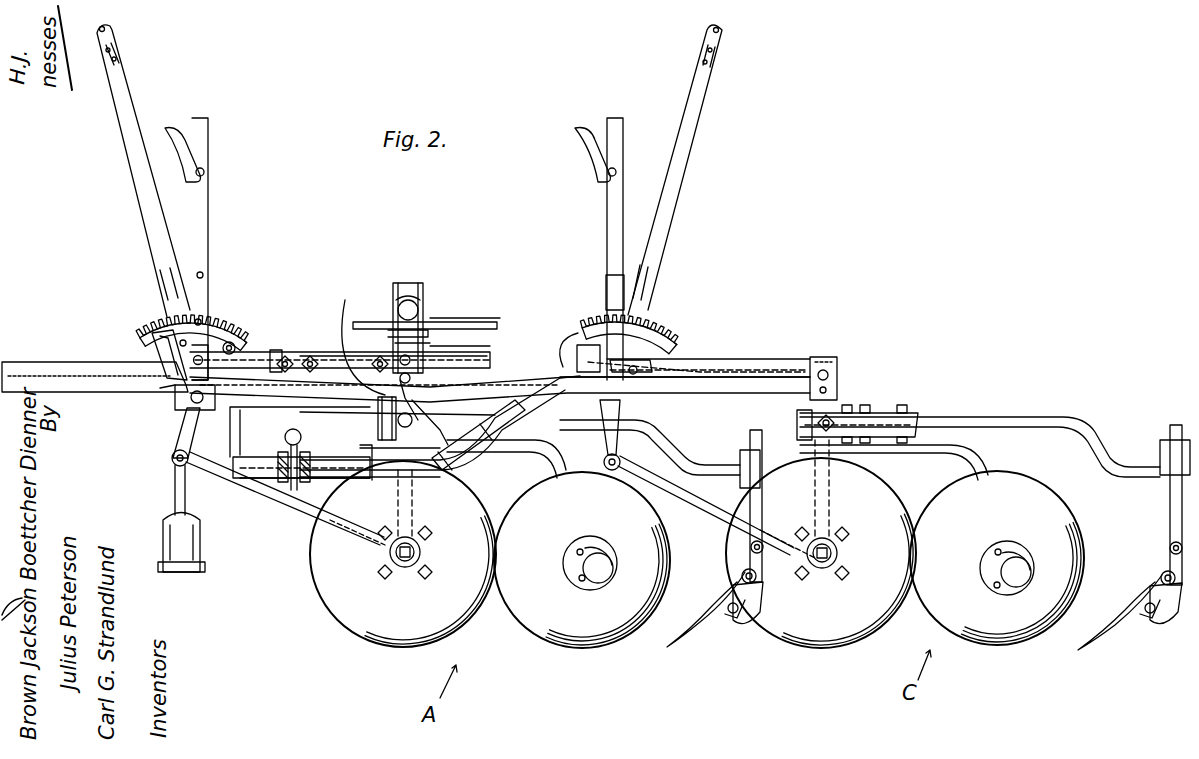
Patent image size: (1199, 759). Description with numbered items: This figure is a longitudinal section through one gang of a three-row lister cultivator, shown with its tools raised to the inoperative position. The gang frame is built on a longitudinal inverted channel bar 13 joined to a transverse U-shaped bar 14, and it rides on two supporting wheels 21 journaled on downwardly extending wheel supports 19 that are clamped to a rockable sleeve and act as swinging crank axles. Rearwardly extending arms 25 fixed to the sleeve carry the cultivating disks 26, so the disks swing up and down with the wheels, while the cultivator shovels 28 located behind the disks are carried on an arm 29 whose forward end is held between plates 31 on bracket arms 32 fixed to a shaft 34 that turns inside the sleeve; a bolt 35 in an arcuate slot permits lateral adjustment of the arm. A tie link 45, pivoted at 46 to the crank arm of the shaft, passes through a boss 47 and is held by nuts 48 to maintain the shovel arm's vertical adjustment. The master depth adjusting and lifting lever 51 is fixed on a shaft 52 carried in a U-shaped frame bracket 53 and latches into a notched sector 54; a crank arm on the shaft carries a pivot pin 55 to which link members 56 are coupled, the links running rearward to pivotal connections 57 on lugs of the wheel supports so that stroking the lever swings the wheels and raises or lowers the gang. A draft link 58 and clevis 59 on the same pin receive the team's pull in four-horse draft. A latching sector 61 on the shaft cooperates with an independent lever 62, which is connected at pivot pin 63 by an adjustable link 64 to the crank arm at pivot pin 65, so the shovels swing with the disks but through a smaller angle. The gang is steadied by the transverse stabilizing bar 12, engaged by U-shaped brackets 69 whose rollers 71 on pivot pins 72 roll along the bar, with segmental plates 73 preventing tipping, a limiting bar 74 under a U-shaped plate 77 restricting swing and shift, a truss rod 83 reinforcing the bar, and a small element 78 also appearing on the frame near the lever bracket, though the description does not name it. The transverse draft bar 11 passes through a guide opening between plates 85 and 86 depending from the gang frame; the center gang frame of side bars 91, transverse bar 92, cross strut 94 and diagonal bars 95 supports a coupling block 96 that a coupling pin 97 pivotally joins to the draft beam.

The draft bar 11 is at (255, 528).
The stabilizing bar 12 is at (428, 322).
The channel bar 13 is at (318, 375).
The U-shaped bar 14 is at (838, 358).
The wheel supports 19 is at (810, 495).
The supporting wheels 21 is at (364, 634).
The disk supporting arms 25 is at (540, 455).
The cultivating disks 26 is at (590, 649).
The cultivator shovels 28 is at (690, 645).
The shovel arm 29 is at (680, 447).
The plates 31 is at (930, 402).
The bracket arms 32 is at (378, 418).
The shaft 34 is at (836, 416).
The bolt 35 is at (800, 378).
The link 45 is at (412, 412).
The pivot 46 is at (435, 372).
The boss 47 is at (451, 390).
The nuts 48 is at (449, 412).
The master depth adjusting and lifting lever 51 is at (125, 105).
The shaft 52 is at (180, 405).
The frame bracket 53 is at (175, 390).
The notched sector 54 is at (238, 330).
The pivot pin 55 is at (172, 462).
The link members 56 is at (258, 485).
The pivotal connection 57 is at (380, 560).
The draft link 58 is at (173, 497).
The clevis 59 is at (165, 538).
The latching sector 61 is at (160, 322).
The independent depth adjusting or lifting lever 62 is at (210, 222).
The pivot pin 63 is at (205, 355).
The link 64 is at (238, 345).
The pivot pin 65 is at (428, 346).
The U-shaped brackets 69 is at (420, 290).
The rollers 71 is at (408, 298).
The pivot pins 72 is at (425, 300).
The segmental plates 73 is at (472, 352).
The limiting bar 74 is at (482, 326).
The U-shaped plate 77 is at (445, 323).
The block 78 is at (286, 348).
The truss rod 83 is at (397, 344).
The plate 85 is at (300, 432).
The plate 86 is at (360, 480).
The side bars 91 is at (512, 410).
The transverse bar 92 is at (236, 460).
The cross strut 94 is at (450, 463).
The diagonal bars 95 is at (400, 478).
The coupling block 96 is at (305, 482).
The coupling pin 97 is at (290, 435).